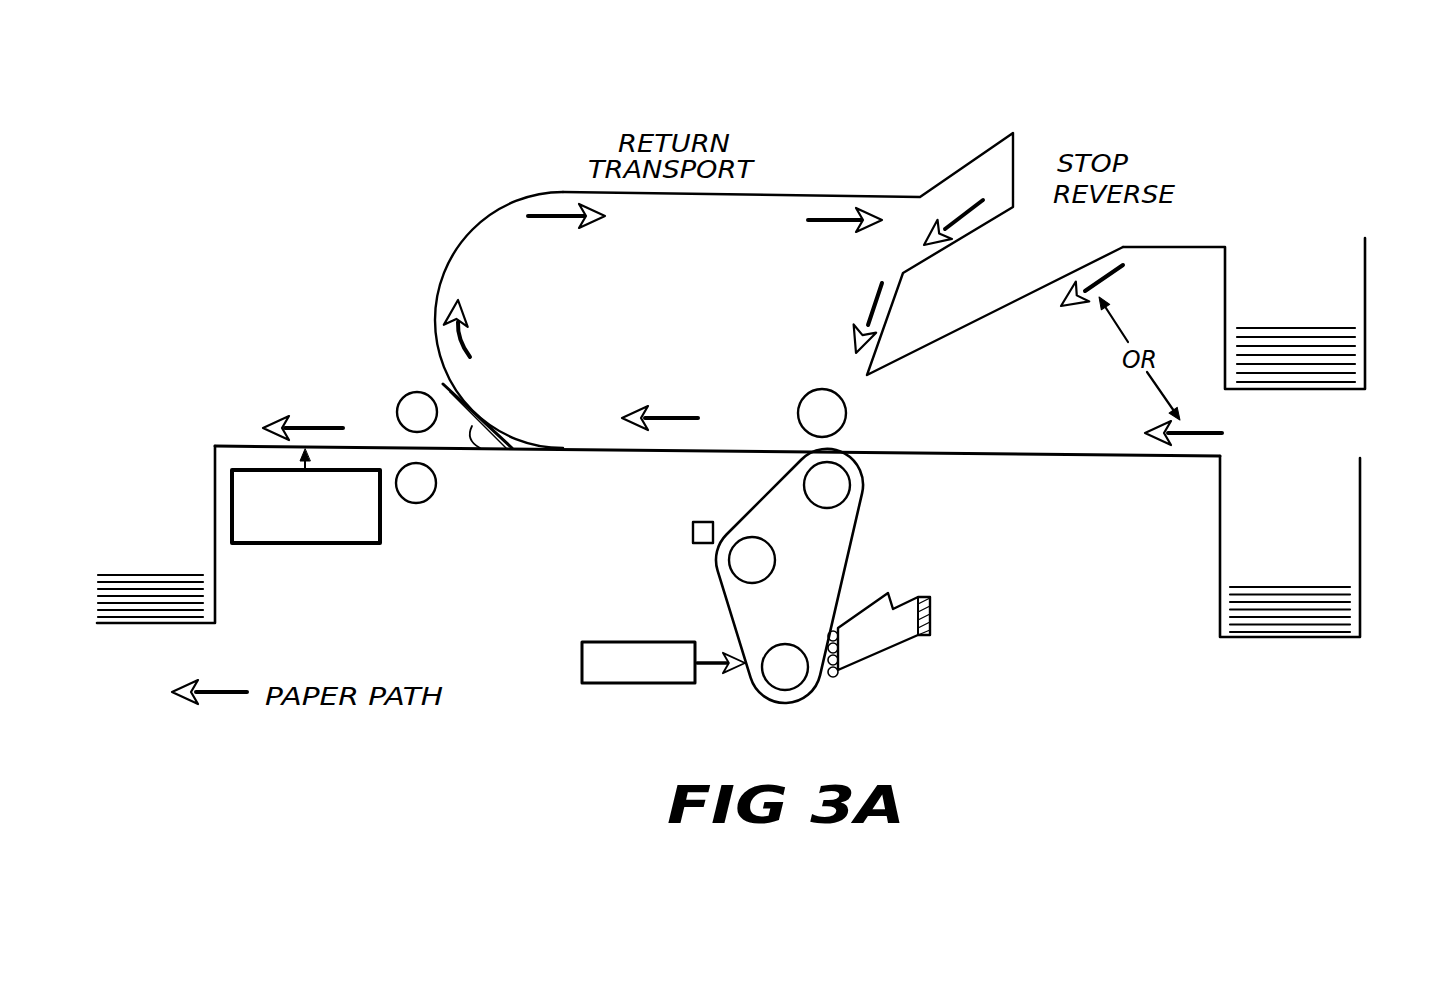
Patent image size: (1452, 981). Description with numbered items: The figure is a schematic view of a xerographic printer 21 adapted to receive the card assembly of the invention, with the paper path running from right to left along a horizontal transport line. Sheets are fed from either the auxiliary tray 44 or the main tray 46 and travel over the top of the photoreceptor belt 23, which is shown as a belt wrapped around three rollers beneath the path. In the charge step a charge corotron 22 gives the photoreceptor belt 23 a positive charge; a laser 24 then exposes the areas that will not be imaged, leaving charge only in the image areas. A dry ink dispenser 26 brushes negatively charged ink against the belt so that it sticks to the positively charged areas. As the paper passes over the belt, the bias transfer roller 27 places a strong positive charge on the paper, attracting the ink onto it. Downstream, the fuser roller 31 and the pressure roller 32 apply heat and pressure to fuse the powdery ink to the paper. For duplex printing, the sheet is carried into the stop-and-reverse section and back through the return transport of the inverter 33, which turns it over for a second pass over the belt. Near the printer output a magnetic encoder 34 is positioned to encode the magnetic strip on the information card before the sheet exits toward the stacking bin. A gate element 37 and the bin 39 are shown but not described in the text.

The xerographic printer 21 is at (875, 82).
The charge corotron 22 is at (697, 522).
The photoreceptor belt 23 is at (727, 612).
The laser 24 is at (600, 684).
The dry ink dispenser 26 is at (899, 640).
The bias transfer roller 27 is at (838, 393).
The fuser roller 31 is at (412, 503).
The pressure roller 32 is at (397, 408).
The inverter 33 is at (430, 287).
The magnetic encoder 34 is at (356, 543).
The gate 37 is at (473, 451).
The stacking bin 39 is at (215, 556).
The auxiliary tray 44 is at (1365, 327).
The main tray 46 is at (1360, 585).